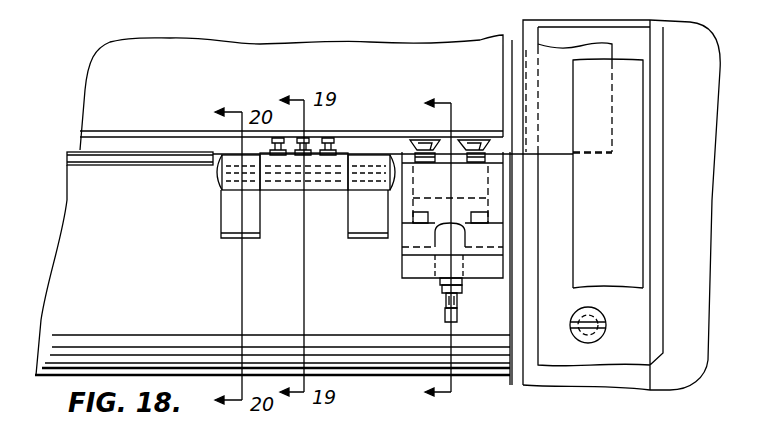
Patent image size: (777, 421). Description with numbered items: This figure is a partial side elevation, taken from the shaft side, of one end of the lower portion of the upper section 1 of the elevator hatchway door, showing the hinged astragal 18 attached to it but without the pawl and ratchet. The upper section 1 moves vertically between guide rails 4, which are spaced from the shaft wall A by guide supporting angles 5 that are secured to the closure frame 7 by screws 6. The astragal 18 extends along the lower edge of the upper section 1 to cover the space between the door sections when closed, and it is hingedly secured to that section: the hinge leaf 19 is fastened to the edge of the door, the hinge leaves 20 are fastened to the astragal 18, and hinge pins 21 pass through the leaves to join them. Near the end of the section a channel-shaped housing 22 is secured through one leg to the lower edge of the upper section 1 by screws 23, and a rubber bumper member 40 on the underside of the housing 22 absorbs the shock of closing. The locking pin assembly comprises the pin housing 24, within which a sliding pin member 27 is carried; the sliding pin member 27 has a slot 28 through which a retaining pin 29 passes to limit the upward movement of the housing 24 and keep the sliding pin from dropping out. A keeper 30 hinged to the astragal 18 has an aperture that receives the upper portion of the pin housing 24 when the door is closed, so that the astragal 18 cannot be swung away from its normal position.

The upper section of the door 1 is at (110, 87).
The astragal 18 is at (86, 197).
The hinge pins 21 is at (220, 176).
The hinge leaf 19 is at (297, 188).
The hinge leaves 20 is at (253, 238).
The channel-shaped housing 22 is at (424, 183).
The screws 23 is at (421, 150).
The keeper 30 is at (490, 216).
The rubber bumper member 40 is at (402, 268).
The retaining pin 29 is at (443, 281).
The pin housing 24 is at (443, 292).
The slot 28 is at (458, 300).
The sliding pin member 27 is at (457, 318).
The guide supporting angles 5 is at (658, 334).
The guide rails 4 is at (636, 262).
The screws 6 is at (606, 329).
The shaft wall A is at (692, 307).
The closure frame 7 is at (447, 252).